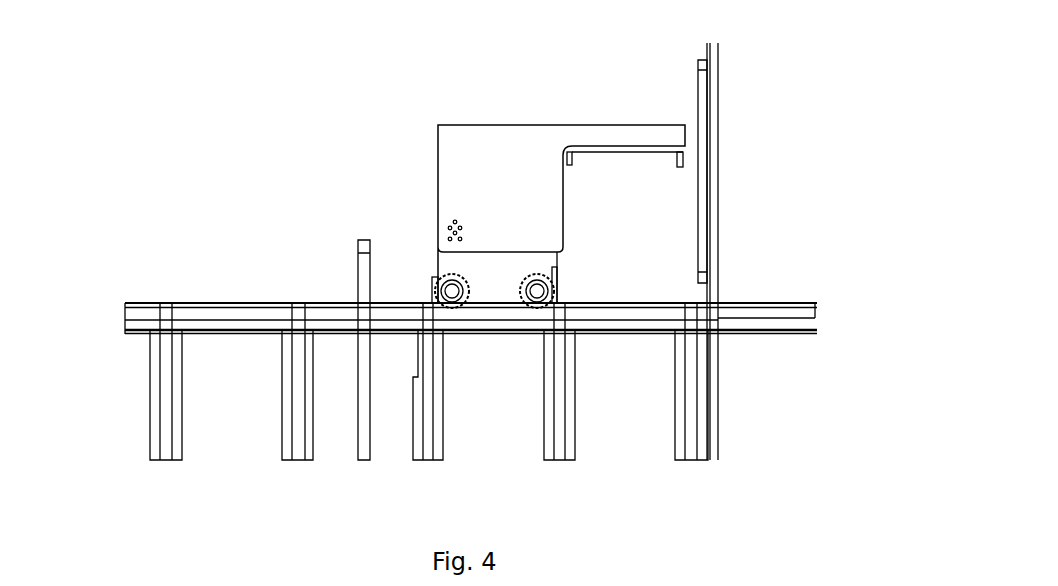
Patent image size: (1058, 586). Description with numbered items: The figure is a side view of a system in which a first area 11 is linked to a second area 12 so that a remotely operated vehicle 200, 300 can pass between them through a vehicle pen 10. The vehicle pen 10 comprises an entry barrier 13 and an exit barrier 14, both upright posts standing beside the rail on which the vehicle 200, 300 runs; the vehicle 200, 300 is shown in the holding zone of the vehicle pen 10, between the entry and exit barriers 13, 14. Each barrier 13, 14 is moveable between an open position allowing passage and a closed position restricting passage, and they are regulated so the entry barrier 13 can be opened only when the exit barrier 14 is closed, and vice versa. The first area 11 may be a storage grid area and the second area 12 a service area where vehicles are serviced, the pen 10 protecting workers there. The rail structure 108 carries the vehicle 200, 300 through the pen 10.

The vehicle pen 10 is at (372, 170).
The first area 11 is at (196, 232).
The second area 12 is at (781, 243).
The entry barrier 13 is at (360, 270).
The exit barrier 14 is at (700, 152).
The rail 108 is at (147, 305).
The remotely operated vehicle 200 is at (523, 193).
The remotely operated vehicle 300 is at (558, 216).